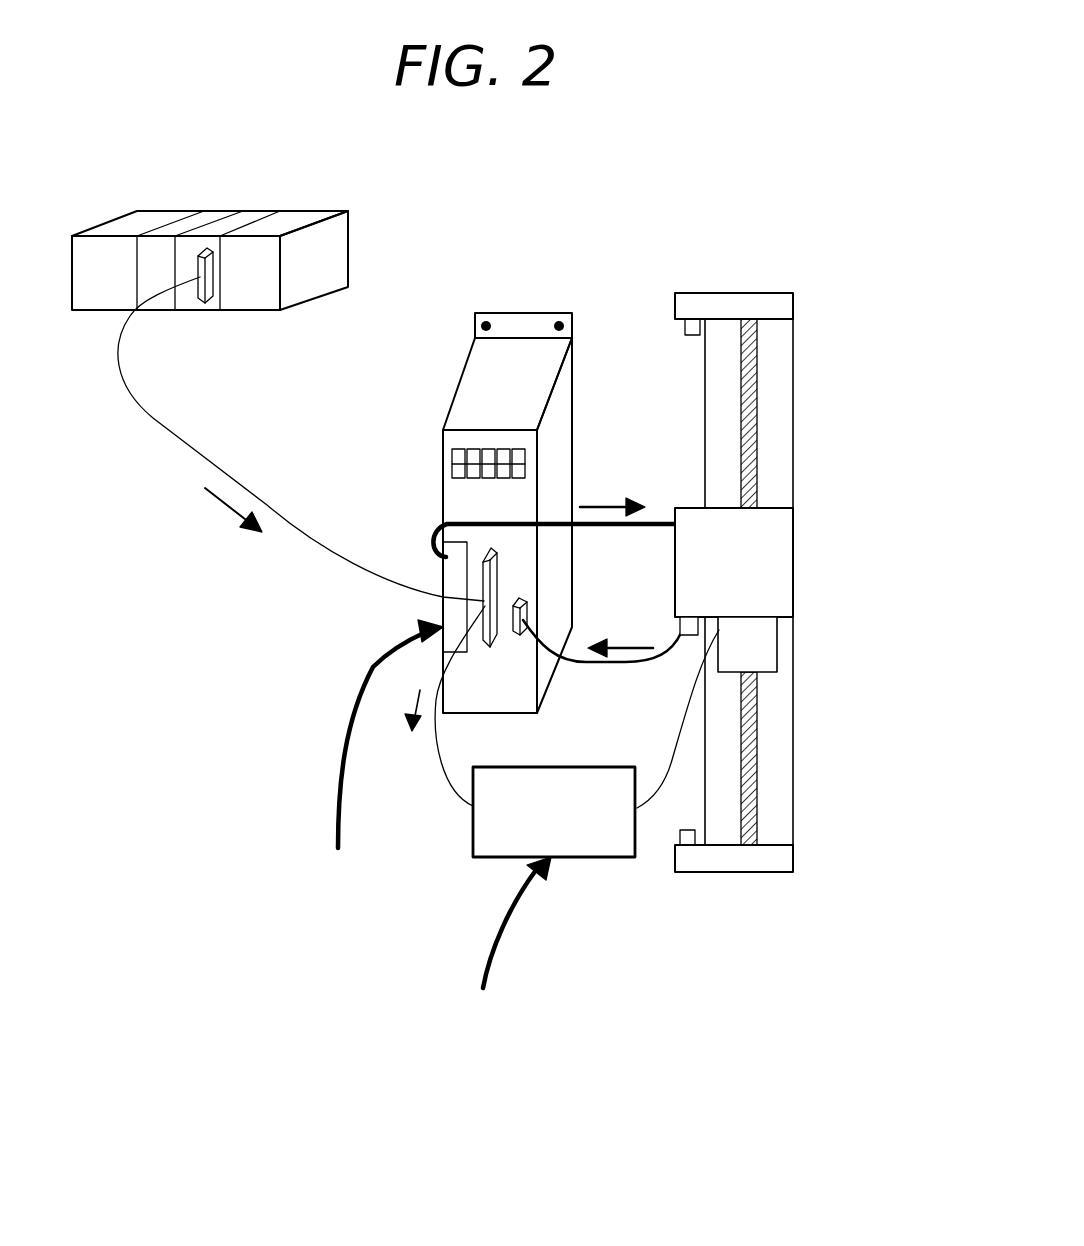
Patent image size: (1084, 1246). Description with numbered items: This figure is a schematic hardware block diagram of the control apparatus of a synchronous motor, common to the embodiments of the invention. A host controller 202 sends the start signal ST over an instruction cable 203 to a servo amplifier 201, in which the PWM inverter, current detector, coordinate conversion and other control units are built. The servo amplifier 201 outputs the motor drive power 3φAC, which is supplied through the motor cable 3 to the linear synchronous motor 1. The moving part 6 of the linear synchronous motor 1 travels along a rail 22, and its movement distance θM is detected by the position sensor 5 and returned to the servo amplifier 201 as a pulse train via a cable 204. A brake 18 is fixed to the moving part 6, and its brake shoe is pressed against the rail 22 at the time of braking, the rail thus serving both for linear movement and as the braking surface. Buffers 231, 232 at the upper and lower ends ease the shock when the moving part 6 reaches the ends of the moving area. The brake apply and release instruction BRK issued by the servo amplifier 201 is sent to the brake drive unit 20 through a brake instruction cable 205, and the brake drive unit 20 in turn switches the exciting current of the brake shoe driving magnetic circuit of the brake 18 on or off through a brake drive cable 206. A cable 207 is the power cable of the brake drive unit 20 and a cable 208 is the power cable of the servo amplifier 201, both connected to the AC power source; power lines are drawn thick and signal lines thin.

The linear synchronous motor 1 is at (782, 361).
The motor cable 3 is at (660, 513).
The position sensor 5 is at (683, 627).
The moving part 6 is at (778, 557).
The brake 18 is at (763, 644).
The brake drive unit 20 is at (505, 767).
The rail 22 is at (760, 435).
The servo amplifier 201 is at (480, 365).
The host controller 202 is at (260, 210).
The instruction cable 203 is at (265, 503).
The cable 204 is at (613, 663).
The brake instruction cable 205 is at (433, 773).
The brake drive cable 206 is at (640, 807).
The cable 207 is at (498, 947).
The cable 208 is at (338, 770).
The buffer 231 is at (690, 340).
The buffer 232 is at (688, 840).